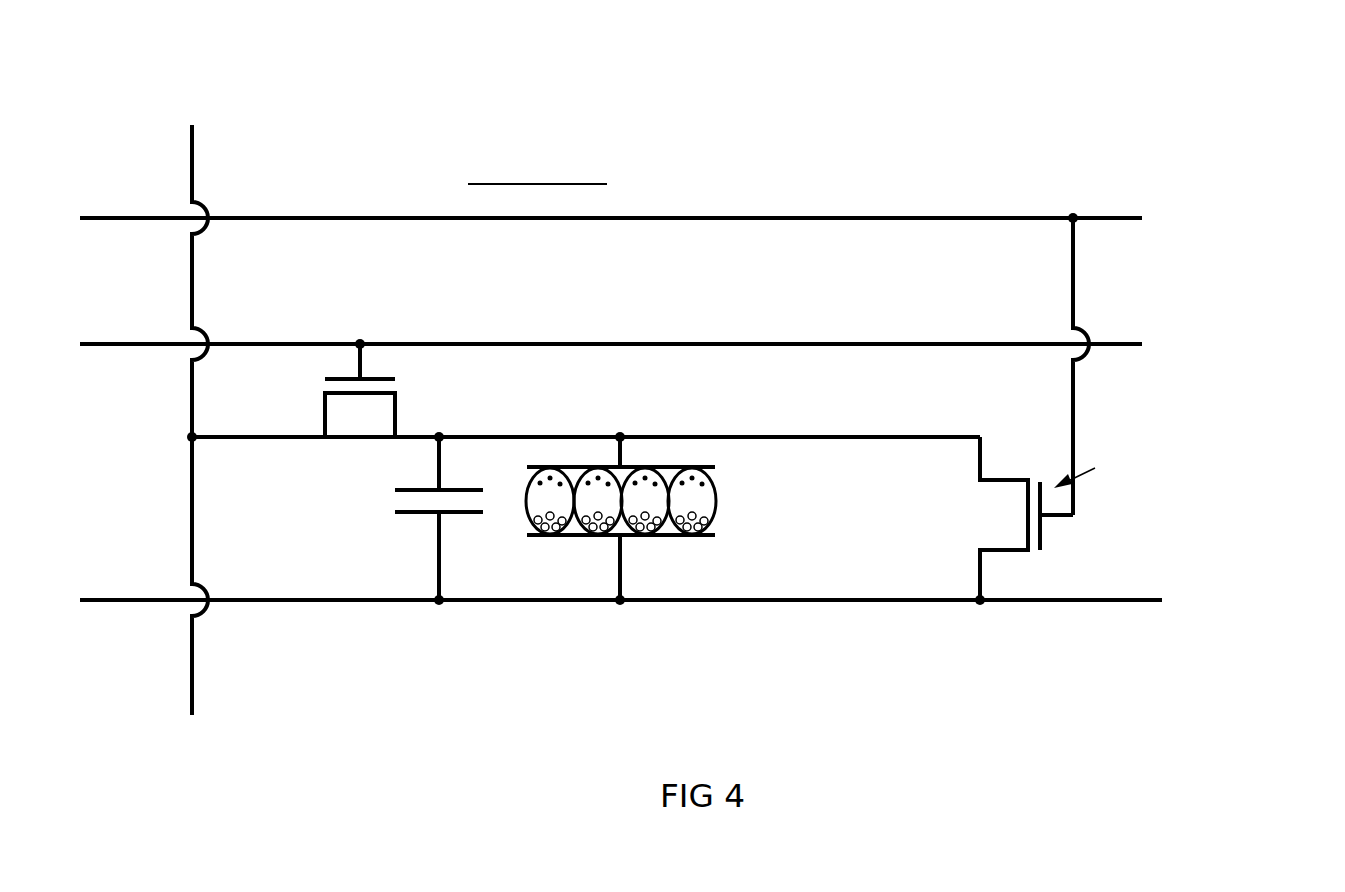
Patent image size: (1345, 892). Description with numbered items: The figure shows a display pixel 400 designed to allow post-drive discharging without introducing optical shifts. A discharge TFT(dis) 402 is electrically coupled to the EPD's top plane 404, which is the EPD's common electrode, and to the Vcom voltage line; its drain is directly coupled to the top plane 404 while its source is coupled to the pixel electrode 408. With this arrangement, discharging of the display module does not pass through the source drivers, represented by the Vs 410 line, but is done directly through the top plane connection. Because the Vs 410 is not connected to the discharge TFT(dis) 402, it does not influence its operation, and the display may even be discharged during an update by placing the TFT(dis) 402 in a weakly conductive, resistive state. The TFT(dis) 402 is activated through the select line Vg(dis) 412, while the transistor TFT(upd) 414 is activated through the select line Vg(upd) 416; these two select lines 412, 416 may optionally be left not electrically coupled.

The display pixel 400 is at (1132, 134).
The discharge TFT(dis) 402 is at (1053, 503).
The EPD top plane 404 is at (667, 538).
The pixel electrode 408 is at (653, 467).
The Vs 410 is at (200, 712).
The select line Vg(dis) 412 is at (1173, 242).
The transistor TFT(upd) 414 is at (353, 417).
The select line Vg(upd) 416 is at (1238, 362).